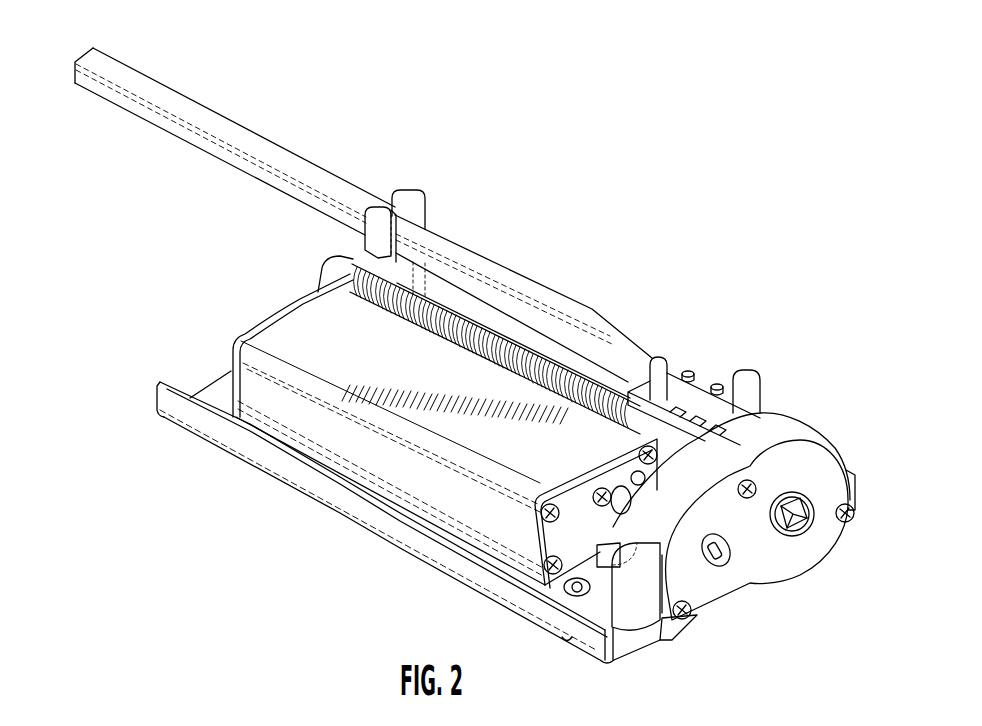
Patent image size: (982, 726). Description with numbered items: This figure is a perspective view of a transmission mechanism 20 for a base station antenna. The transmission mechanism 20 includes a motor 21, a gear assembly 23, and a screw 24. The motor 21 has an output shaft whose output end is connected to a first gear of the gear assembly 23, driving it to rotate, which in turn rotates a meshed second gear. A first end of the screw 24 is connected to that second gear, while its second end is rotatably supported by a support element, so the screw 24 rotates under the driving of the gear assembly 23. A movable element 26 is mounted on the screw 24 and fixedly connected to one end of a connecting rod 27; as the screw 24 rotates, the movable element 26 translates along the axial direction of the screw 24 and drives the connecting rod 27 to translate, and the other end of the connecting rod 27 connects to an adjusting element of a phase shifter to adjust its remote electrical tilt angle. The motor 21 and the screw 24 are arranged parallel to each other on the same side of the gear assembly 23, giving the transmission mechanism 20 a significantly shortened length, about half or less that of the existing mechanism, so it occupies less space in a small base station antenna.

The transmission mechanism 20 is at (650, 248).
The motor 21 is at (298, 340).
The gear assembly 23 is at (815, 468).
The screw 24 is at (515, 350).
The movable element 26 is at (667, 420).
The connecting rod 27 is at (337, 196).